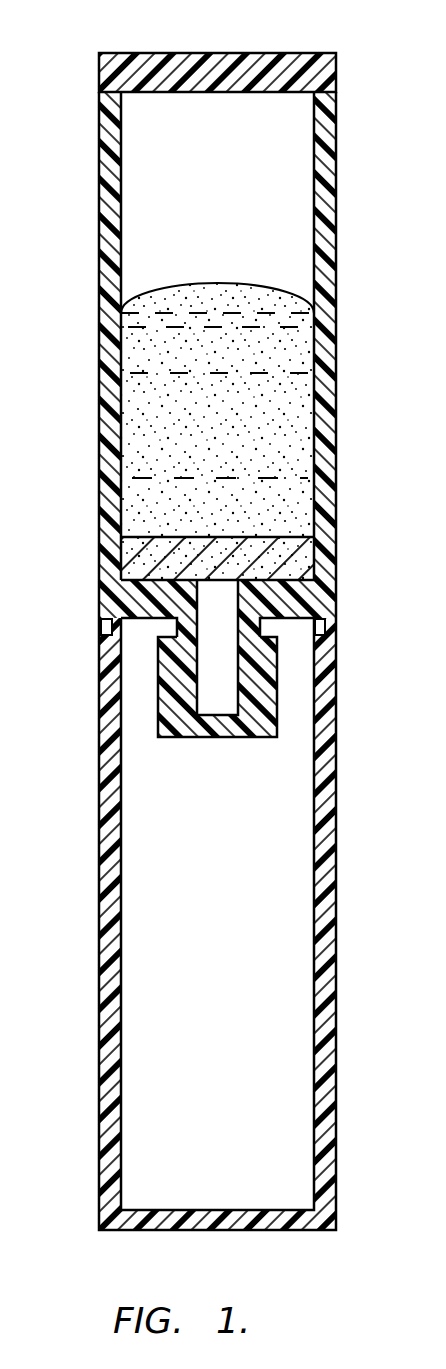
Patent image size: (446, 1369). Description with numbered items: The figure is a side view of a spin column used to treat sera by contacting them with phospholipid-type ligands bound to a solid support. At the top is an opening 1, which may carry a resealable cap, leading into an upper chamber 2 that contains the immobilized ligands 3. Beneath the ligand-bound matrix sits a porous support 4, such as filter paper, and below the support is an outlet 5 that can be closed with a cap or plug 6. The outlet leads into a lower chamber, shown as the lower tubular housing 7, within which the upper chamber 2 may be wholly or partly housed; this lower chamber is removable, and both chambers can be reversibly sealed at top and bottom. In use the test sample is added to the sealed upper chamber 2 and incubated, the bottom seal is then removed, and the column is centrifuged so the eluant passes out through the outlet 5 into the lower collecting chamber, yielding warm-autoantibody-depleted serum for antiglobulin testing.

The opening 1 is at (310, 53).
The upper chamber 2 is at (98, 240).
The immobilized ligand(s) 3 is at (296, 440).
The porous support 4 is at (290, 555).
The outlet 5 is at (208, 603).
The cap or plug 6 is at (175, 688).
The lower tubular housing 7 is at (100, 940).